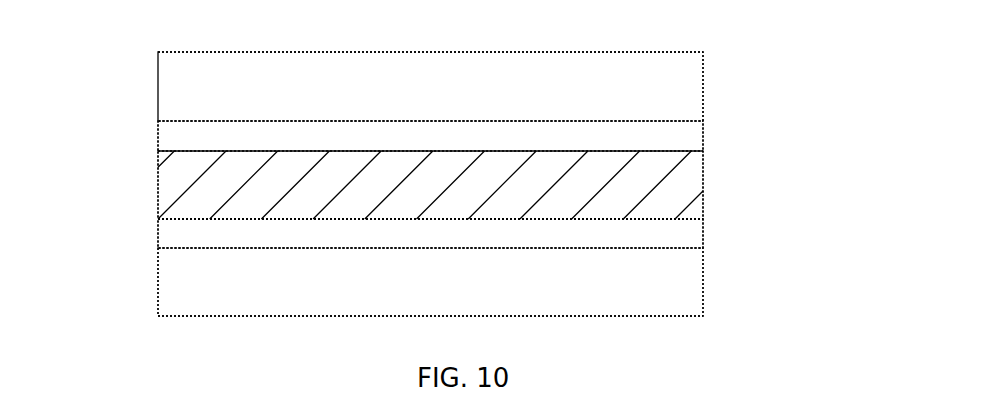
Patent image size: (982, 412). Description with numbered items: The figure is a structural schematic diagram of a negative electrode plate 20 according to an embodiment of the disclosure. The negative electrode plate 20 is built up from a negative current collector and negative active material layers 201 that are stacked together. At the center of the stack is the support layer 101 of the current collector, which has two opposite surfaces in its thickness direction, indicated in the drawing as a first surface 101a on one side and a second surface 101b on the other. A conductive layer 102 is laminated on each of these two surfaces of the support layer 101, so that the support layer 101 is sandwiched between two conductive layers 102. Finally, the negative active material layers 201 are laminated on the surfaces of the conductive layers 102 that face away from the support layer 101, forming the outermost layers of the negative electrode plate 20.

The negative electrode plate 20 is at (428, 35).
The negative active material layer 201 is at (695, 93).
The conductive layer 102 is at (693, 135).
The support layer 101 is at (173, 188).
The first surface of substrate 101a is at (177, 151).
The second surface of substrate 101b is at (177, 219).